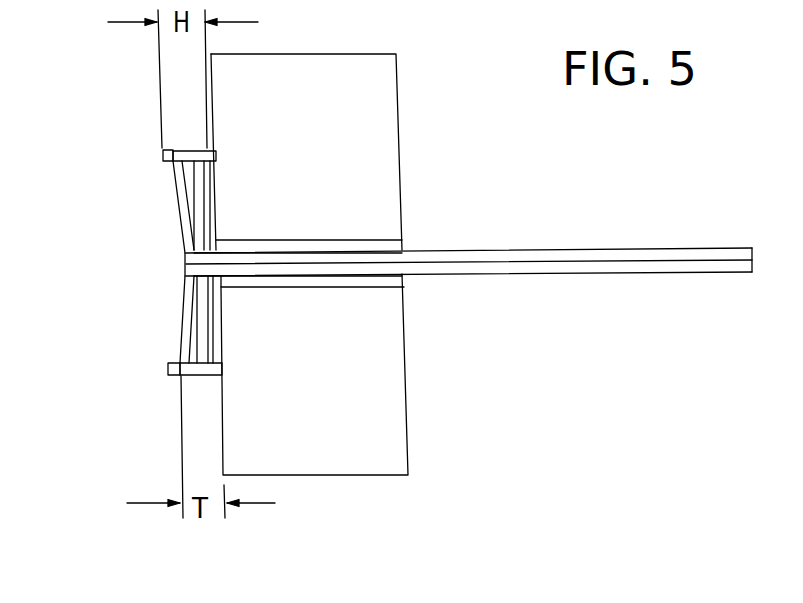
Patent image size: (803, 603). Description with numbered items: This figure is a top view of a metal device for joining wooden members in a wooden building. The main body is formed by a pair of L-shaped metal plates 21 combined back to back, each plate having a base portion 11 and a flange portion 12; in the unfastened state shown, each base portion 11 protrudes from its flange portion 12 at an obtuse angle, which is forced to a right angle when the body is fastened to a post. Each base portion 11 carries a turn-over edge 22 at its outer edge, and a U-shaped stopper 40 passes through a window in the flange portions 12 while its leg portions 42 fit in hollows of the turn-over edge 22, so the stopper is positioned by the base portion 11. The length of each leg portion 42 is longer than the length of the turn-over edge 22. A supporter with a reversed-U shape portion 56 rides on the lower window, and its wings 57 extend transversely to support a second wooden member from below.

The base portion 11 is at (177, 193).
The flange portion 12 is at (608, 276).
The L-shaped metal plate 21 is at (555, 250).
The turn-over edge 22 is at (195, 150).
The U-shaped stopper 40 is at (200, 218).
The leg portion 42 is at (163, 156).
The reversed-U shape portion 56 is at (403, 277).
The wing 57 is at (385, 107).